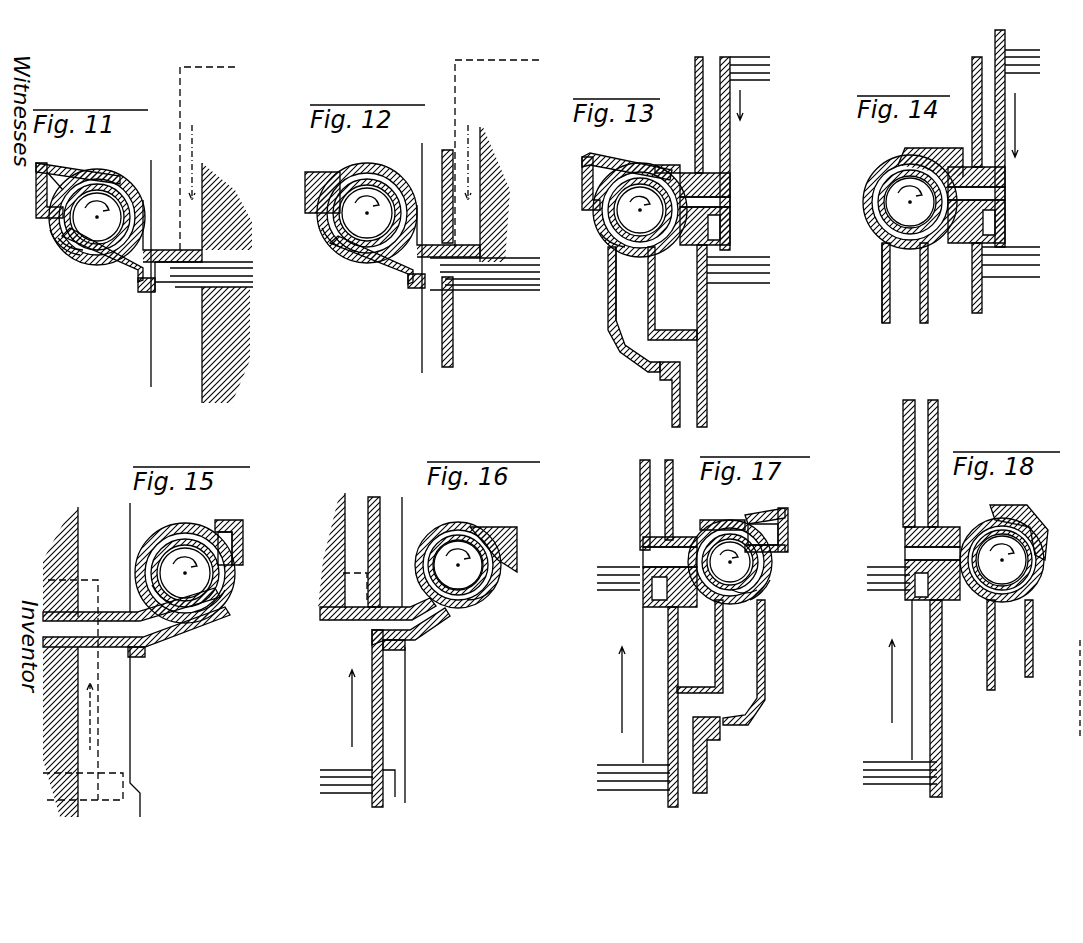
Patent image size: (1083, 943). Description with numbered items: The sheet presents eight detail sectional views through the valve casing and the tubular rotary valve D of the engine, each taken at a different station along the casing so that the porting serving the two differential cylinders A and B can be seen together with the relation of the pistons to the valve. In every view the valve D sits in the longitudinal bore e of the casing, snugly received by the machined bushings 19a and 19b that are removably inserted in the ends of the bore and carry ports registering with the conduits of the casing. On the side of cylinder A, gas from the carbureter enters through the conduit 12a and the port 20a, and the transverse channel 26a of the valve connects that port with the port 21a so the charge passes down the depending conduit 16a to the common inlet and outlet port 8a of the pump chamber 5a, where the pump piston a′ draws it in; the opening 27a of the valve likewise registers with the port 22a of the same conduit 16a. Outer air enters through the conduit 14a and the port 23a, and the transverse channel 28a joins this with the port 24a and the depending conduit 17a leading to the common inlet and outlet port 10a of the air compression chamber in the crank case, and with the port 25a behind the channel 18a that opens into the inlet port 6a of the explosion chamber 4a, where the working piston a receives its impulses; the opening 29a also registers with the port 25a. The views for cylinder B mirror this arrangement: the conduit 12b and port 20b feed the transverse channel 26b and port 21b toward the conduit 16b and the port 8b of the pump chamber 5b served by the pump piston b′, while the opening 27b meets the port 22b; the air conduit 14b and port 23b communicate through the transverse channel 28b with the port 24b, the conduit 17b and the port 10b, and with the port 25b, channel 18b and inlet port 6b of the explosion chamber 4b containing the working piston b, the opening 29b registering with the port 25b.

In FIG. 11, the conduit 12a is at (45, 172).
In FIG. 11, the port 20a is at (78, 172).
In FIG. 11, the bushing 19a is at (135, 185).
In FIG. 12, the bushing 19a is at (333, 243).
In FIG. 13, the bushing 19a is at (610, 260).
In FIG. 14, the bushing 19a is at (892, 255).
In FIG. 11, the longitudinal bore e is at (113, 193).
In FIG. 12, the longitudinal bore e is at (375, 178).
In FIG. 13, the longitudinal bore e is at (622, 175).
In FIG. 14, the longitudinal bore e is at (877, 172).
In FIG. 15, the longitudinal bore e is at (178, 535).
In FIG. 16, the longitudinal bore e is at (460, 532).
In FIG. 17, the longitudinal bore e is at (708, 588).
In FIG. 18, the longitudinal bore e is at (978, 592).
In FIG. 11, the differential cylinder A is at (210, 200).
In FIG. 12, the differential cylinder A is at (492, 180).
In FIG. 13, the differential cylinder A is at (693, 62).
In FIG. 14, the differential cylinder A is at (970, 138).
In FIG. 11, the port 22a is at (62, 238).
In FIG. 12, the port 22a is at (325, 230).
In FIG. 11, the transverse channel 26a is at (70, 250).
In FIG. 11, the port 21a is at (95, 245).
In FIG. 11, the tubular rotary valve D is at (88, 265).
In FIG. 12, the tubular rotary valve D is at (363, 255).
In FIG. 13, the tubular rotary valve D is at (610, 232).
In FIG. 14, the tubular rotary valve D is at (880, 232).
In FIG. 15, the tubular rotary valve D is at (192, 605).
In FIG. 16, the tubular rotary valve D is at (470, 602).
In FIG. 17, the tubular rotary valve D is at (745, 590).
In FIG. 18, the tubular rotary valve D is at (1032, 585).
In FIG. 11, the depending conduit 16a is at (125, 280).
In FIG. 12, the depending conduit 16a is at (390, 280).
In FIG. 11, the common inlet and outlet port 8a is at (150, 292).
In FIG. 12, the common inlet and outlet port 8a is at (420, 290).
In FIG. 11, the pump piston a′ is at (192, 290).
In FIG. 12, the pump piston a′ is at (495, 287).
In FIG. 13, the pump piston a′ is at (758, 278).
In FIG. 14, the pump piston a′ is at (1015, 280).
In FIG. 12, the opening 27a is at (335, 173).
In FIG. 12, the pump chamber 5a is at (460, 330).
In FIG. 13, the pump chamber 5a is at (710, 318).
In FIG. 14, the pump chamber 5a is at (990, 305).
In FIG. 13, the conduit 14a is at (595, 158).
In FIG. 13, the channel 18a is at (660, 166).
In FIG. 14, the channel 18a is at (935, 165).
In FIG. 13, the port 25a is at (700, 180).
In FIG. 13, the port 23a is at (588, 182).
In FIG. 13, the inlet port 6a is at (712, 202).
In FIG. 14, the inlet port 6a is at (985, 195).
In FIG. 13, the port 24a is at (600, 235).
In FIG. 13, the transverse channel 28a is at (658, 242).
In FIG. 13, the depending conduit 17a is at (612, 315).
In FIG. 14, the depending conduit 17a is at (895, 300).
In FIG. 13, the common inlet and outlet port 10a is at (672, 410).
In FIG. 13, the working piston a is at (750, 62).
In FIG. 14, the working piston a is at (1018, 65).
In FIG. 14, the explosion chamber 4a is at (1008, 48).
In FIG. 14, the opening 29a is at (915, 248).
In FIG. 15, the differential cylinder B is at (65, 532).
In FIG. 16, the differential cylinder B is at (338, 530).
In FIG. 17, the differential cylinder B is at (640, 490).
In FIG. 18, the differential cylinder B is at (903, 487).
In FIG. 15, the bushing 19b is at (145, 545).
In FIG. 16, the bushing 19b is at (422, 540).
In FIG. 17, the bushing 19b is at (715, 598).
In FIG. 18, the bushing 19b is at (990, 615).
In FIG. 15, the conduit 12b is at (225, 520).
In FIG. 15, the transverse channel 26b is at (150, 575).
In FIG. 15, the port 20b is at (232, 545).
In FIG. 15, the port 22b is at (228, 590).
In FIG. 16, the port 22b is at (498, 592).
In FIG. 15, the port 21b is at (212, 602).
In FIG. 15, the depending conduit 16b is at (160, 625).
In FIG. 16, the depending conduit 16b is at (440, 630).
In FIG. 15, the common inlet and outlet port 8b is at (130, 660).
In FIG. 16, the common inlet and outlet port 8b is at (398, 650).
In FIG. 16, the opening 27b is at (445, 580).
In FIG. 16, the working piston b is at (350, 632).
In FIG. 17, the working piston b is at (622, 585).
In FIG. 18, the working piston b is at (893, 582).
In FIG. 16, the pump chamber 5b is at (383, 727).
In FIG. 17, the pump chamber 5b is at (667, 680).
In FIG. 18, the pump chamber 5b is at (942, 735).
In FIG. 16, the pump piston b′ is at (355, 788).
In FIG. 17, the pump piston b′ is at (640, 783).
In FIG. 18, the pump piston b′ is at (898, 775).
In FIG. 17, the explosion chamber 4b is at (640, 515).
In FIG. 18, the explosion chamber 4b is at (903, 515).
In FIG. 17, the inlet port 6b is at (660, 555).
In FIG. 18, the inlet port 6b is at (935, 540).
In FIG. 17, the port 25b is at (710, 520).
In FIG. 17, the channel 18b is at (736, 522).
In FIG. 18, the channel 18b is at (1005, 518).
In FIG. 17, the conduit 14b is at (778, 512).
In FIG. 17, the port 23b is at (775, 538).
In FIG. 17, the port 24b is at (772, 583).
In FIG. 17, the transverse channel 28b is at (762, 590).
In FIG. 17, the depending conduit 17b is at (765, 670).
In FIG. 18, the depending conduit 17b is at (1008, 650).
In FIG. 17, the common inlet and outlet port 10b is at (705, 785).
In FIG. 18, the opening 29b is at (1030, 520).